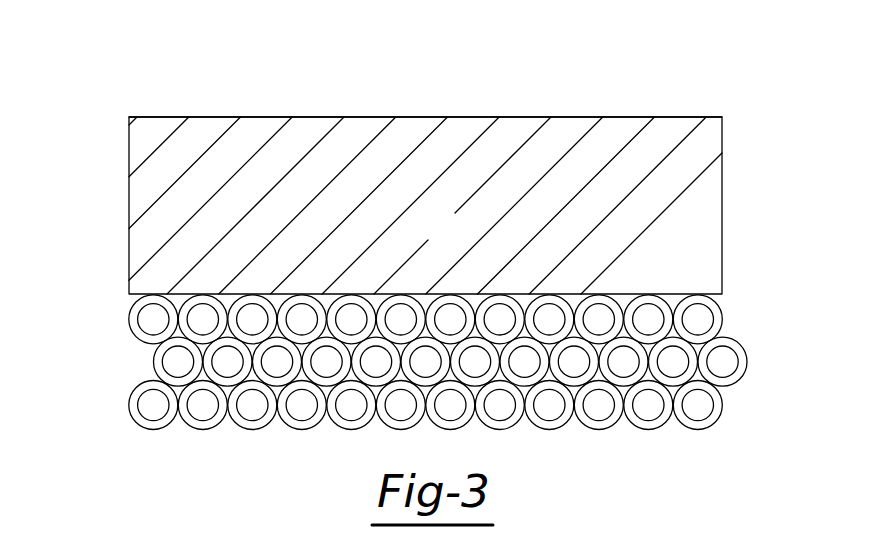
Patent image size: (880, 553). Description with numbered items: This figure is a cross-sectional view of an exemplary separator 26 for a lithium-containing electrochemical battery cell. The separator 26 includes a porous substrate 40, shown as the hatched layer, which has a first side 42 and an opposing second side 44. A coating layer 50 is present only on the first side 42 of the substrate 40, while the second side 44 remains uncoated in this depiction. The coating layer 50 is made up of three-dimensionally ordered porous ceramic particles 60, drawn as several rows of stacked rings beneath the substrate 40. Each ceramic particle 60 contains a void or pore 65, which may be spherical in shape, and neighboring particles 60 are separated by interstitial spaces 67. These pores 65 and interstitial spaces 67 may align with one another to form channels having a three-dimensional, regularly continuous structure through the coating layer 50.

The separator 26 is at (229, 56).
The porous substrate 40 is at (452, 229).
The second side 44 is at (375, 116).
The first side 42 is at (681, 322).
The coating layer 50 is at (95, 295).
The 3D ordered porous ceramic particles 60 is at (240, 422).
The pore 65 is at (348, 412).
The interstitial spaces 67 is at (178, 392).